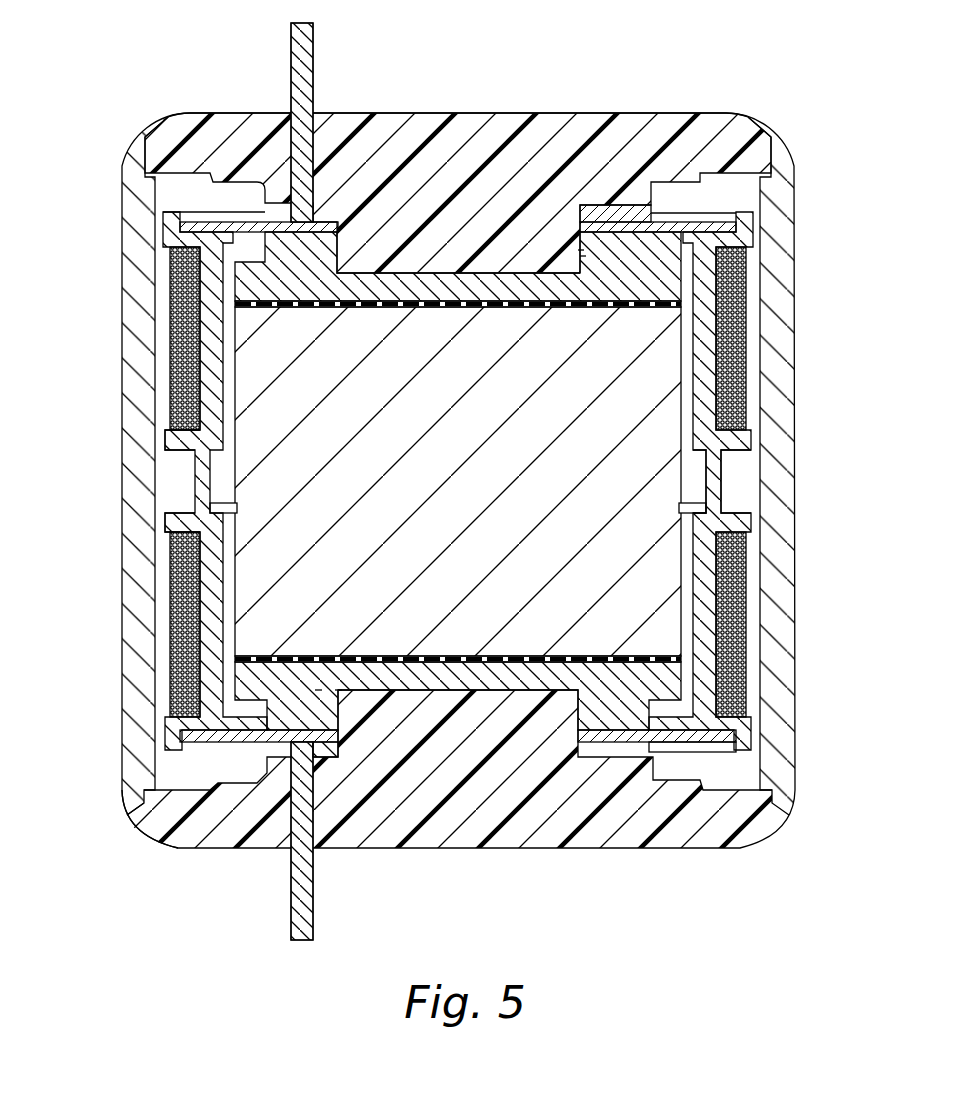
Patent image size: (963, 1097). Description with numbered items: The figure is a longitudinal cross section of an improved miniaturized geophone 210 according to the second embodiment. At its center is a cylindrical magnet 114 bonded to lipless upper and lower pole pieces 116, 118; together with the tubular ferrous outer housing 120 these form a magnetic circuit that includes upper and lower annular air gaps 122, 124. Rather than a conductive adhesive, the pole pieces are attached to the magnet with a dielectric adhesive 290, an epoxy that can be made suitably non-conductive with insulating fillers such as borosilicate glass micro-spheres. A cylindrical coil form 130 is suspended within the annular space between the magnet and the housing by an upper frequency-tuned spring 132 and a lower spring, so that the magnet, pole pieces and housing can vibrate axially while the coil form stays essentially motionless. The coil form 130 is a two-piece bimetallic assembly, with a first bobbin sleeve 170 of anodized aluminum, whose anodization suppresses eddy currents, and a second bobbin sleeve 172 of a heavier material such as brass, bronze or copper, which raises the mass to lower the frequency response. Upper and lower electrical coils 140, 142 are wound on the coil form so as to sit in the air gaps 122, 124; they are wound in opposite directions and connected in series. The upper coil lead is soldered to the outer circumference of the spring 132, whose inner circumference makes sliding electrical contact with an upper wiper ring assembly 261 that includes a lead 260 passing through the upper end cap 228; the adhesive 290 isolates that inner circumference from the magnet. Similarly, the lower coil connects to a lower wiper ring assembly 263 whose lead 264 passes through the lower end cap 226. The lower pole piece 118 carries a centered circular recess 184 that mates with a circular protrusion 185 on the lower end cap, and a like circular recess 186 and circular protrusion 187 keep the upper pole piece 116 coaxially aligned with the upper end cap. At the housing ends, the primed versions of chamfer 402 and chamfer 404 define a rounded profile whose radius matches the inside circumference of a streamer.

The geophone 210 is at (130, 40).
The outer housing 120 is at (137, 565).
The upper end cap 228 is at (437, 130).
The lower end cap 226 is at (452, 836).
The lead 260 is at (314, 48).
The lead 264 is at (316, 905).
The upper wiper ring assembly 261 is at (622, 212).
The lower wiper ring assembly 263 is at (327, 758).
The magnet 114 is at (237, 397).
The upper pole piece 116 is at (228, 288).
The lower pole piece 118 is at (237, 682).
The upper frequency-tuned spring 132 is at (597, 230).
The upper annular air gap 122 is at (165, 331).
The lower annular air gap 124 is at (165, 625).
The upper electrical coil 140 is at (745, 372).
The lower electrical coil 142 is at (748, 585).
The coil form 130 is at (720, 482).
The first bobbin sleeve 170 is at (168, 441).
The second bobbin sleeve 172 is at (168, 523).
The dielectric adhesive 290 is at (703, 300).
The circular recess 184 is at (338, 690).
The circular protrusion 185 is at (318, 690).
The circular recess 186 is at (585, 257).
The circular protrusion 187 is at (580, 250).
The chamfer 402 is at (126, 802).
The chamfer 404 is at (168, 851).